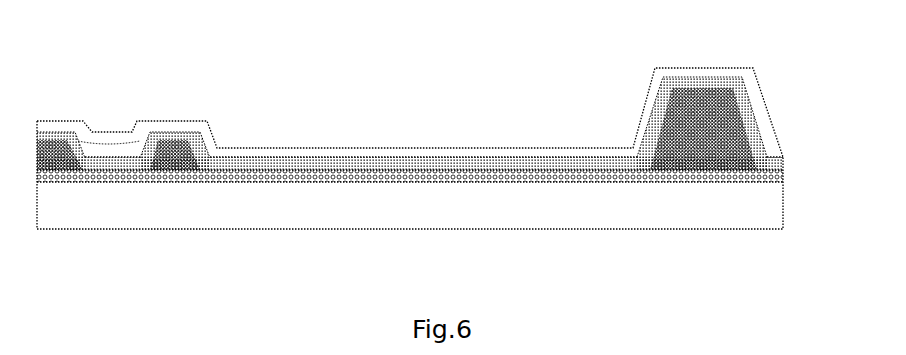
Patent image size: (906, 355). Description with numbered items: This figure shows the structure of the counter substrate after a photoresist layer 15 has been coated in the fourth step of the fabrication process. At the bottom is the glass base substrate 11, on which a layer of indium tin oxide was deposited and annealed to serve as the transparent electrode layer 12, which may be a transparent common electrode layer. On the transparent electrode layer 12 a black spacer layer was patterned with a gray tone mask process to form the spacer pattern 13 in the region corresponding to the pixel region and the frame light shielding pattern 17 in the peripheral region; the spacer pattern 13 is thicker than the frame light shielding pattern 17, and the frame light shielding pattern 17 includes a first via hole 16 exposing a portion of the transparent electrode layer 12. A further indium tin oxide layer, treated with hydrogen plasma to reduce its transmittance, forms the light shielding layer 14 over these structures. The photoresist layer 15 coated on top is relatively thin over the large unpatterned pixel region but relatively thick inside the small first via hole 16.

The glass base substrate 11 is at (600, 218).
The transparent electrode layer 12 is at (517, 181).
The spacer pattern 13 is at (718, 93).
The light shielding layer 14 is at (447, 172).
The photoresist layer 15 is at (367, 152).
The first via hole 16 is at (105, 138).
The frame light shielding pattern 17 is at (58, 132).